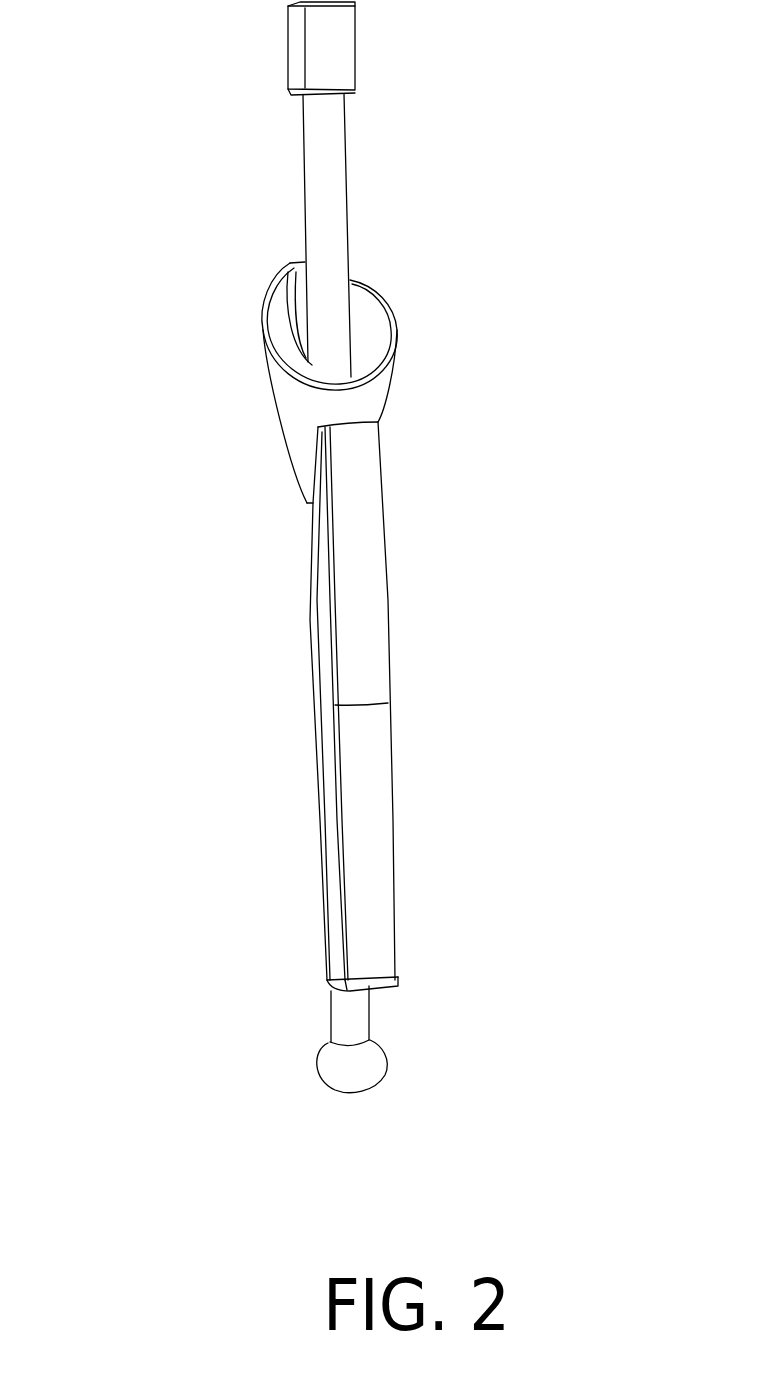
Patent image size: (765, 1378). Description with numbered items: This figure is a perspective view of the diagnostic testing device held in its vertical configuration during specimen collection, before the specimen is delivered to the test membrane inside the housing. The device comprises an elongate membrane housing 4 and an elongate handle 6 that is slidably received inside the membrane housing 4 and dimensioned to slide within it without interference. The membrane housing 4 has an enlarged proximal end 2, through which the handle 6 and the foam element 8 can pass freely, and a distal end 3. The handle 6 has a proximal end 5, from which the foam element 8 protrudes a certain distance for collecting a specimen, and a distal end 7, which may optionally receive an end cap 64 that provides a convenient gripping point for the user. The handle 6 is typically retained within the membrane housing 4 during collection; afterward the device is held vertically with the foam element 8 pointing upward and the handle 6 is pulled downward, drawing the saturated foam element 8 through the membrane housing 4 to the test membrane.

The proximal end 2 is at (248, 282).
The distal end 3 is at (400, 982).
The membrane housing 4 is at (358, 672).
The proximal end 5 is at (220, 113).
The handle 6 is at (322, 180).
The distal end 7 is at (285, 1033).
The foam element 8 is at (335, 55).
The end cap 64 is at (383, 1078).